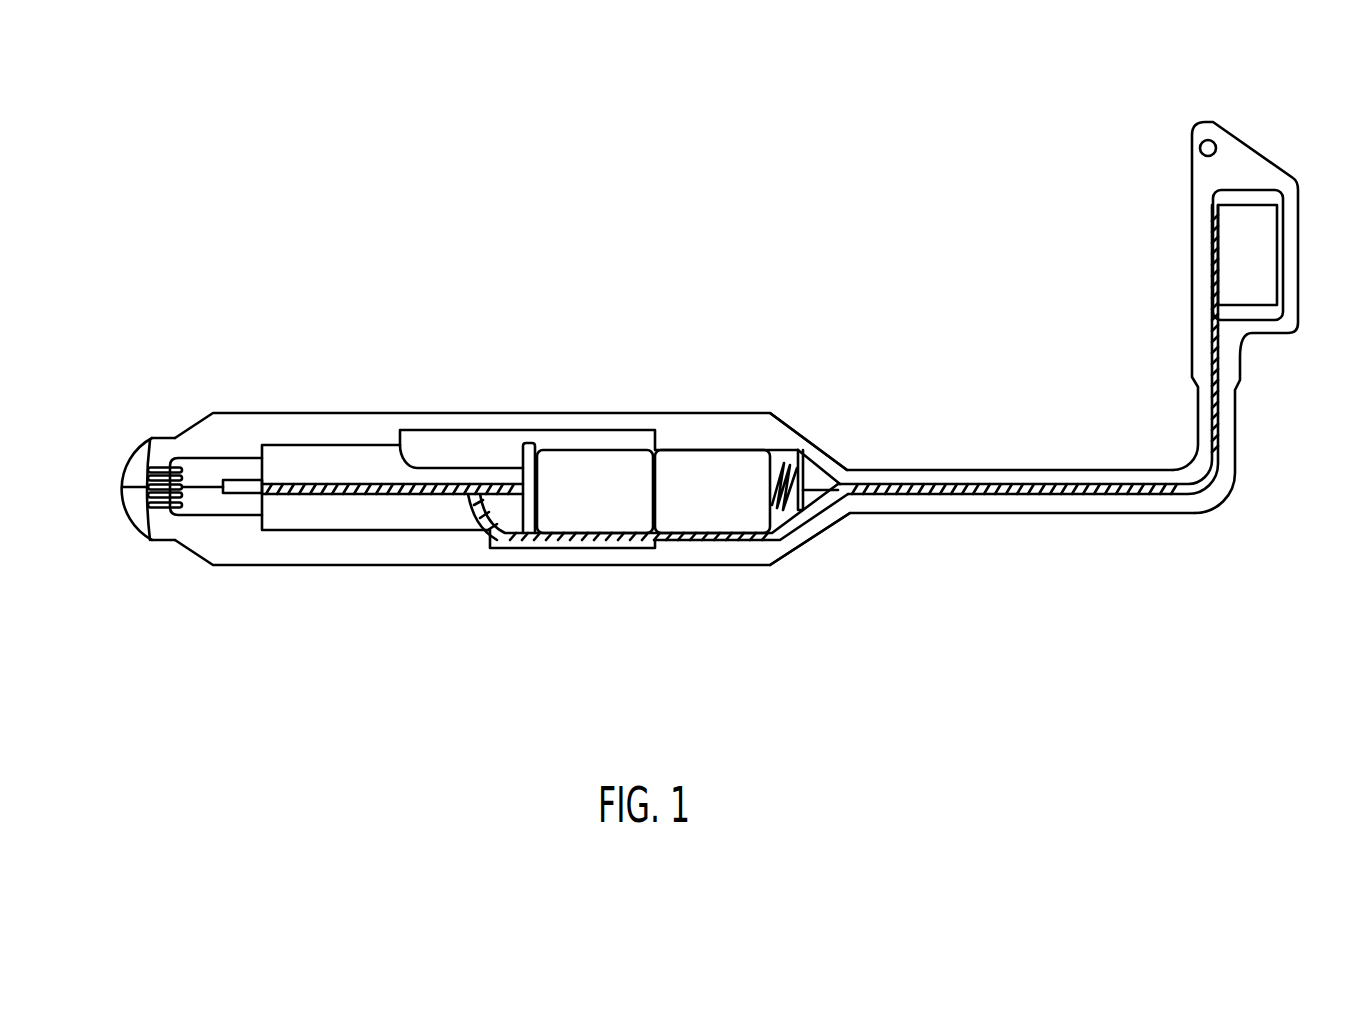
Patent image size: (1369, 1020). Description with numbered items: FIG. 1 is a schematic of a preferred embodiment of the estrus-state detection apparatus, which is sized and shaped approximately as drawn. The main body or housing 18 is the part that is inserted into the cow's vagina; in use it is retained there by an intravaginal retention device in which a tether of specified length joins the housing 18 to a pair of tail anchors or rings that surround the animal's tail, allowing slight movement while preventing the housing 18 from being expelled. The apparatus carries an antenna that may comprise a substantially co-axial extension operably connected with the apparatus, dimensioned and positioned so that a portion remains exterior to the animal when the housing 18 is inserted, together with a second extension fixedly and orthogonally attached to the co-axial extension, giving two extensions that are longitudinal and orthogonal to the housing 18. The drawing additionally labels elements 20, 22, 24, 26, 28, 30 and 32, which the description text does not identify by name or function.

The housing 18 is at (637, 567).
The brush tip 20 is at (130, 523).
The drive cable 22 is at (783, 537).
The frame opening 24 is at (1248, 307).
The tapered transition 26 is at (823, 532).
The extension shaft 28 is at (1033, 515).
The arm 30 is at (1192, 243).
The hanging hole 32 is at (1202, 145).